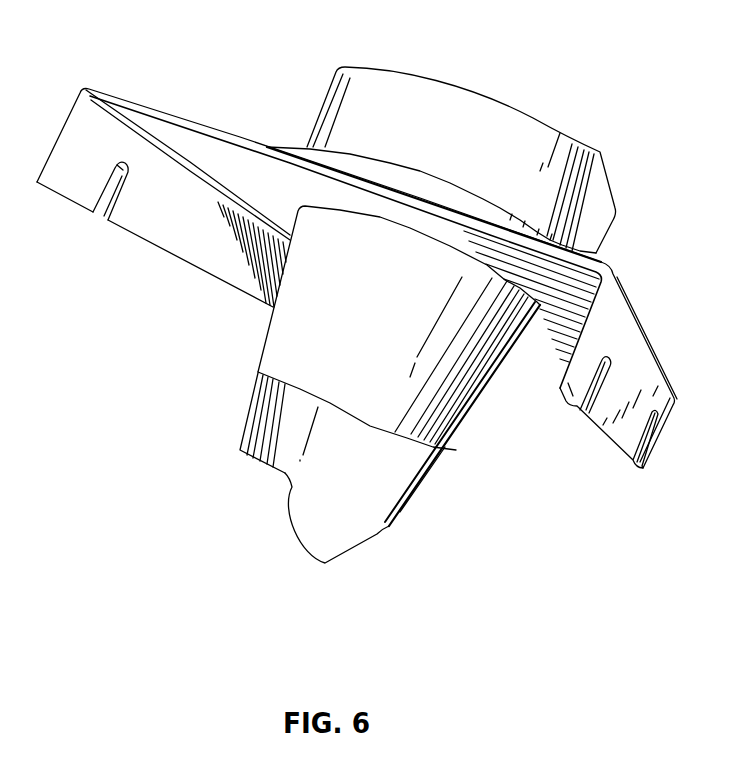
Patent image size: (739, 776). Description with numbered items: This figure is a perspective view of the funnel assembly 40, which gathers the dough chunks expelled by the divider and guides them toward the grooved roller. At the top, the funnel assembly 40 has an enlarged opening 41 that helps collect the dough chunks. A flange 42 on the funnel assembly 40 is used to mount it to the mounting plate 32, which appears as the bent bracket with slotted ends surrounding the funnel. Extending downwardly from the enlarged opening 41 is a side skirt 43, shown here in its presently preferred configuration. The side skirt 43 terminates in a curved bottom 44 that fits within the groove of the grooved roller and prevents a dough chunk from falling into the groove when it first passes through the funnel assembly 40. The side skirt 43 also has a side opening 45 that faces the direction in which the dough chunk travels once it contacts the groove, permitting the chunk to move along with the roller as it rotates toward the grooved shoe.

The mounting plate 32 is at (630, 296).
The funnel assembly 40 is at (570, 156).
The enlarged opening 41 is at (490, 90).
The flange 42 is at (289, 146).
The side skirt 43 is at (483, 378).
The curved bottom 44 is at (340, 533).
The side opening 45 is at (273, 423).